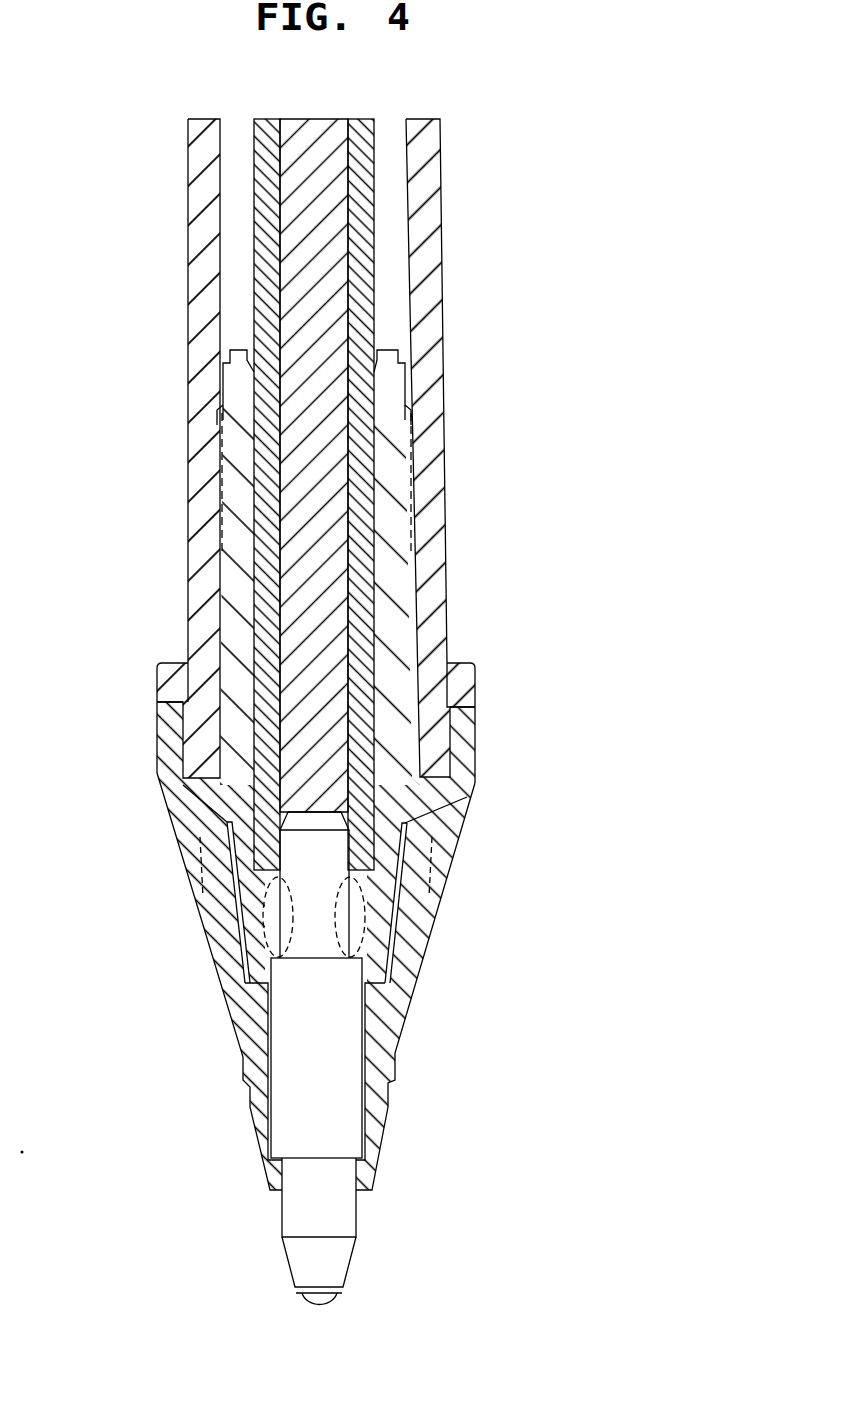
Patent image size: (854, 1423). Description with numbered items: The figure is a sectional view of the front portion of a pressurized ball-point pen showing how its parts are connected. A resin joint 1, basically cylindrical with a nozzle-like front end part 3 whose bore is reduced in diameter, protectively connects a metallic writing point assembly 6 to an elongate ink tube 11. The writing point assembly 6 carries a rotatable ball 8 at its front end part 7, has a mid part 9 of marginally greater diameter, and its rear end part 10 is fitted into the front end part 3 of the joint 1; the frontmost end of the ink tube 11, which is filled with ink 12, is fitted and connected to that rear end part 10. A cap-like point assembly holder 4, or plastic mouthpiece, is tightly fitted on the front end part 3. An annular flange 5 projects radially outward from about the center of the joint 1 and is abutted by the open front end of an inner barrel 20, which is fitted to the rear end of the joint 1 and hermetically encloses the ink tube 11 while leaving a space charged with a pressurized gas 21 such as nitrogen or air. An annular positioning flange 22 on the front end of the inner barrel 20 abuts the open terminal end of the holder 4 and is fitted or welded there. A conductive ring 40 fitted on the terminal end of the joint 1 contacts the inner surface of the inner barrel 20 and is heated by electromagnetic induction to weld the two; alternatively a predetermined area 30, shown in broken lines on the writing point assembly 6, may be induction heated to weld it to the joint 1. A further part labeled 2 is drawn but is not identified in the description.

The joint 1 is at (400, 600).
The thread 2 is at (413, 560).
The front end part 3 is at (373, 967).
The point assembly holder 4 is at (238, 1035).
The annular flange 5 is at (422, 813).
The writing point assembly 6 is at (288, 1212).
The front end part 7 is at (332, 1273).
The rotatable ball 8 is at (307, 1303).
The mid part 9 is at (327, 1116).
The rear end part 10 is at (290, 850).
The ink tube 11 is at (258, 465).
The ink 12 is at (290, 325).
The inner barrel 20 is at (425, 196).
The pressurized gas 21 is at (232, 198).
The annular positioning flange 22 is at (165, 672).
The predetermined area 30 is at (270, 925).
The conductive ring 40 is at (425, 362).